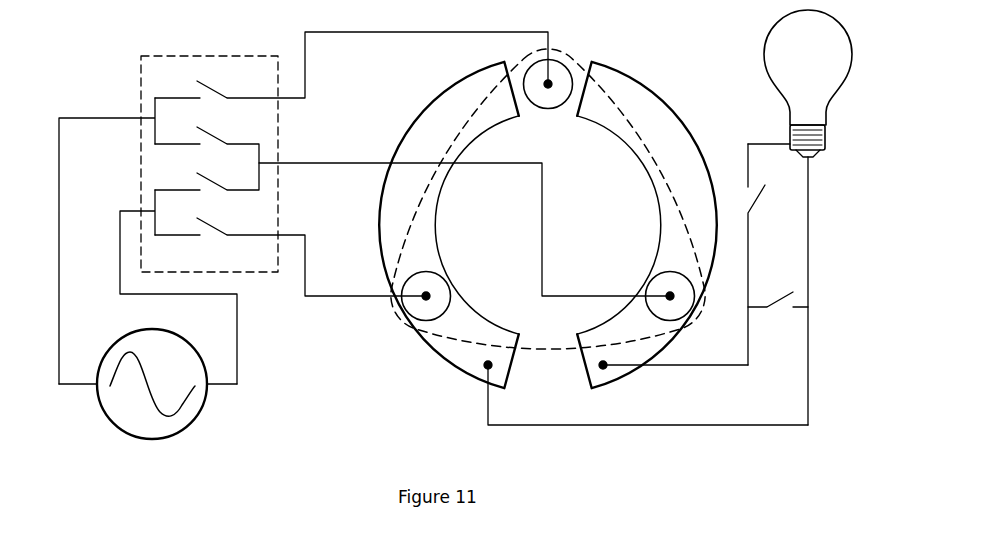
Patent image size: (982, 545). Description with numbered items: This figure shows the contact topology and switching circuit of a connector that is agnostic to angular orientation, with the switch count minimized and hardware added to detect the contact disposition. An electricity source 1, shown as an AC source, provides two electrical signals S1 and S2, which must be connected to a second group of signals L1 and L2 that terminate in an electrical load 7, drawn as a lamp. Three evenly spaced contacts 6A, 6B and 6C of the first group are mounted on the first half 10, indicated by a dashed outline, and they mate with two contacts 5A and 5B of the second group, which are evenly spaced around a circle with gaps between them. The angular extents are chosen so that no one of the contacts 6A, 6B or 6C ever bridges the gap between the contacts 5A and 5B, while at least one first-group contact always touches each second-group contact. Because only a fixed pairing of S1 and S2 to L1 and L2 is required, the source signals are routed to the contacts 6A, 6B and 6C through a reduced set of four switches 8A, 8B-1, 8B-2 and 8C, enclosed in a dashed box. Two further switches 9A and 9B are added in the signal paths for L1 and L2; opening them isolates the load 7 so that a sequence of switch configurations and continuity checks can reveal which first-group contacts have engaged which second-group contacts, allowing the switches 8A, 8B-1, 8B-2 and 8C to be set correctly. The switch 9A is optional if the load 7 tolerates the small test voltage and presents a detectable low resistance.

The electricity source 1 is at (195, 422).
The second-group contact 5A is at (457, 102).
The second-group contact 5B is at (632, 100).
The first-group contact 6A is at (548, 98).
The first-group contact 6B is at (438, 293).
The first-group contact 6C is at (660, 290).
The electrical load 7 is at (812, 137).
The switch 8A is at (290, 257).
The switch 8B-1 is at (207, 188).
The switch 8B-2 is at (412, 211).
The switch 8C is at (351, 77).
The switch 9A is at (778, 313).
The switch 9B is at (745, 254).
The first half 10 is at (572, 57).
The electrical signal S1 is at (73, 402).
The electrical signal S2 is at (224, 402).
The electrical signal L1 is at (675, 354).
The electrical signal L2 is at (648, 395).